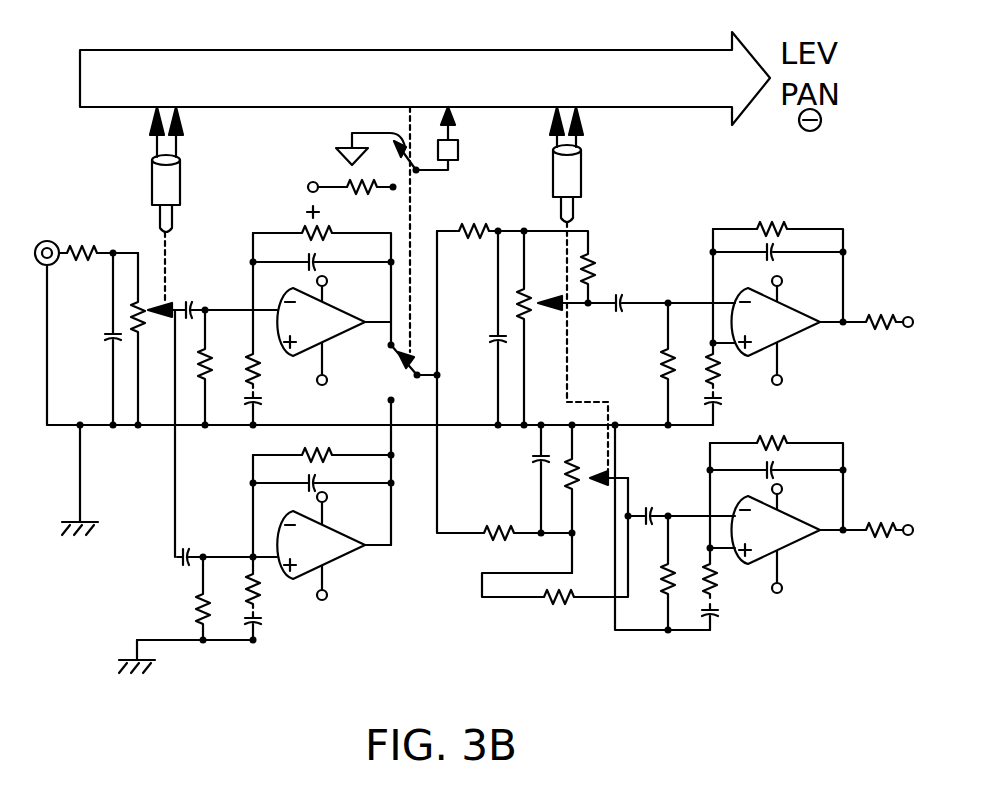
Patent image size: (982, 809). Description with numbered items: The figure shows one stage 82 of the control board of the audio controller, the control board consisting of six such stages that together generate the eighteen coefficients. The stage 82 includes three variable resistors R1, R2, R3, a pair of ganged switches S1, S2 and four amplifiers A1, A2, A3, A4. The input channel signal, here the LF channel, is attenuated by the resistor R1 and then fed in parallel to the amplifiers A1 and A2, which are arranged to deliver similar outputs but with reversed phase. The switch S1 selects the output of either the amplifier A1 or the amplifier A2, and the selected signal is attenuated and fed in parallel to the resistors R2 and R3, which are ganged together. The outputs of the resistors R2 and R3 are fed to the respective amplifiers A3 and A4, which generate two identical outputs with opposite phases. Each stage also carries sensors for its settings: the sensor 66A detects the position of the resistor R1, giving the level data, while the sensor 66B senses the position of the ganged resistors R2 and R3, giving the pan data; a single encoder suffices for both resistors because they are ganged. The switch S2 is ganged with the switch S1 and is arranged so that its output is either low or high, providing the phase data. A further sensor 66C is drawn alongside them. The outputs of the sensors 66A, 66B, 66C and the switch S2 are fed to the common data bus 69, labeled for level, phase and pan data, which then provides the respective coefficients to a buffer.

The common data bus 69 is at (135, 57).
The sensor 66A is at (152, 167).
The sensor 66B is at (459, 152).
The pan control potentiometer actuator 66C is at (583, 162).
The switch S1 is at (412, 376).
The switch S2 is at (408, 141).
The variable resistor R1 is at (170, 331).
The variable resistor R2 is at (552, 328).
The variable resistor R3 is at (612, 499).
The amplifier A1 is at (321, 330).
The amplifier A2 is at (321, 546).
The amplifier A3 is at (776, 330).
The amplifier A4 is at (776, 538).
The stage 82 is at (681, 698).